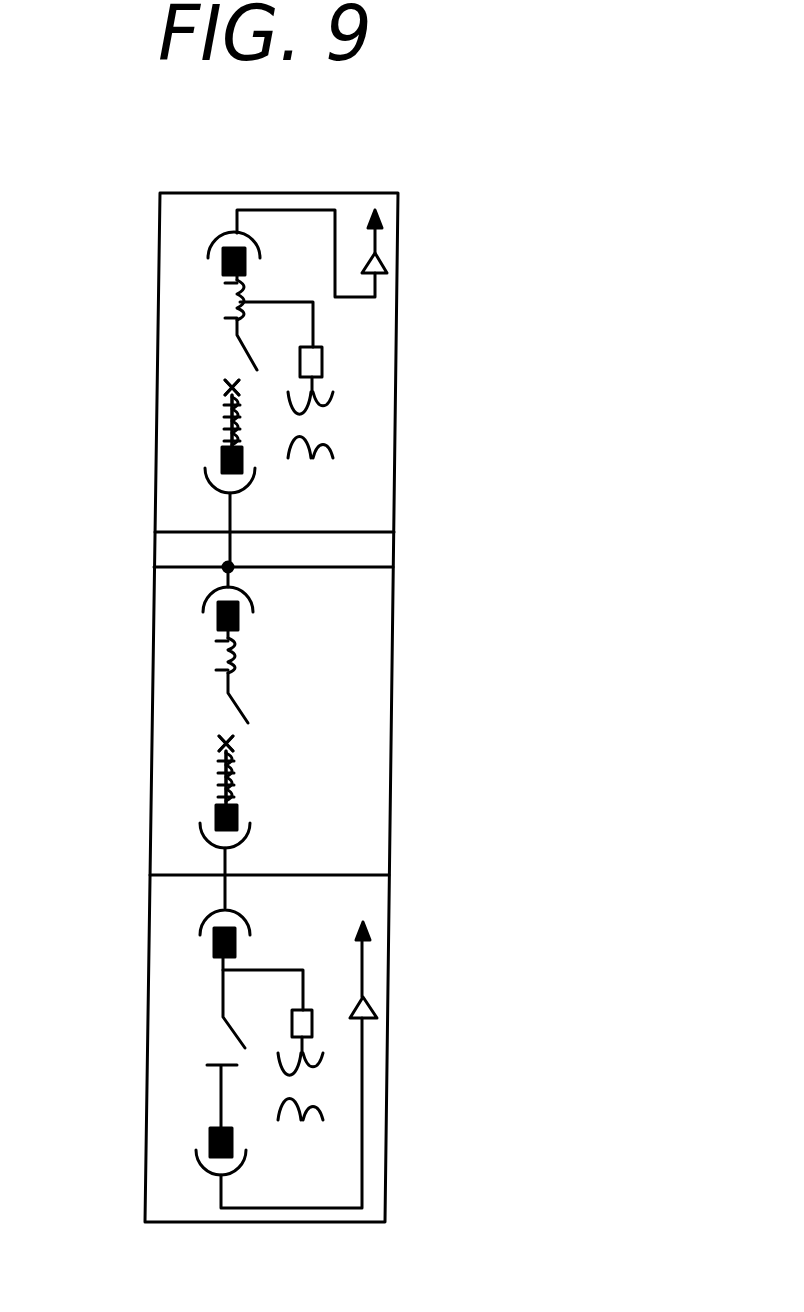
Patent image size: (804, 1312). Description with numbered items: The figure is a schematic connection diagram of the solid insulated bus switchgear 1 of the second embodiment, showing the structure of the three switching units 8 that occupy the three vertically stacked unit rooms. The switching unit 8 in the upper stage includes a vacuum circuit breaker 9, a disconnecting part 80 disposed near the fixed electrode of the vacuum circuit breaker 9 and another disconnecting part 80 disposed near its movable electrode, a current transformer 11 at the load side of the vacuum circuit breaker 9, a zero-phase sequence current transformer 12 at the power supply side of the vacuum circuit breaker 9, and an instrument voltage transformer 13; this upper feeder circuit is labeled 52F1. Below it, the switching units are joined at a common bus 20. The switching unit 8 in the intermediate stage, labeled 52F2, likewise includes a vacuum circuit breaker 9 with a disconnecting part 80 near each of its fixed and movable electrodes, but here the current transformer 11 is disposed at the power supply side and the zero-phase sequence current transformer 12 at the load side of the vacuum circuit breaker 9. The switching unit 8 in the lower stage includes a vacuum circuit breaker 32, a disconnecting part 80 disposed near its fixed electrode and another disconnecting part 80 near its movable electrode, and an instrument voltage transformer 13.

The switchgear enclosure 1 is at (398, 193).
The switching unit 8 is at (375, 330).
The vacuum circuit breaker 9 is at (237, 357).
The current transformer 11 is at (230, 305).
The zero-phase sequence current transformer 12 is at (222, 420).
The instrument voltage transformer 13 is at (335, 422).
The bus bar 20 is at (380, 565).
The vacuum circuit breaker 32 is at (225, 1030).
The feeder circuit breaker 1 52F1 is at (153, 413).
The feeder circuit breaker 2 52F2 is at (144, 770).
The disconnecting part 80 is at (223, 262).